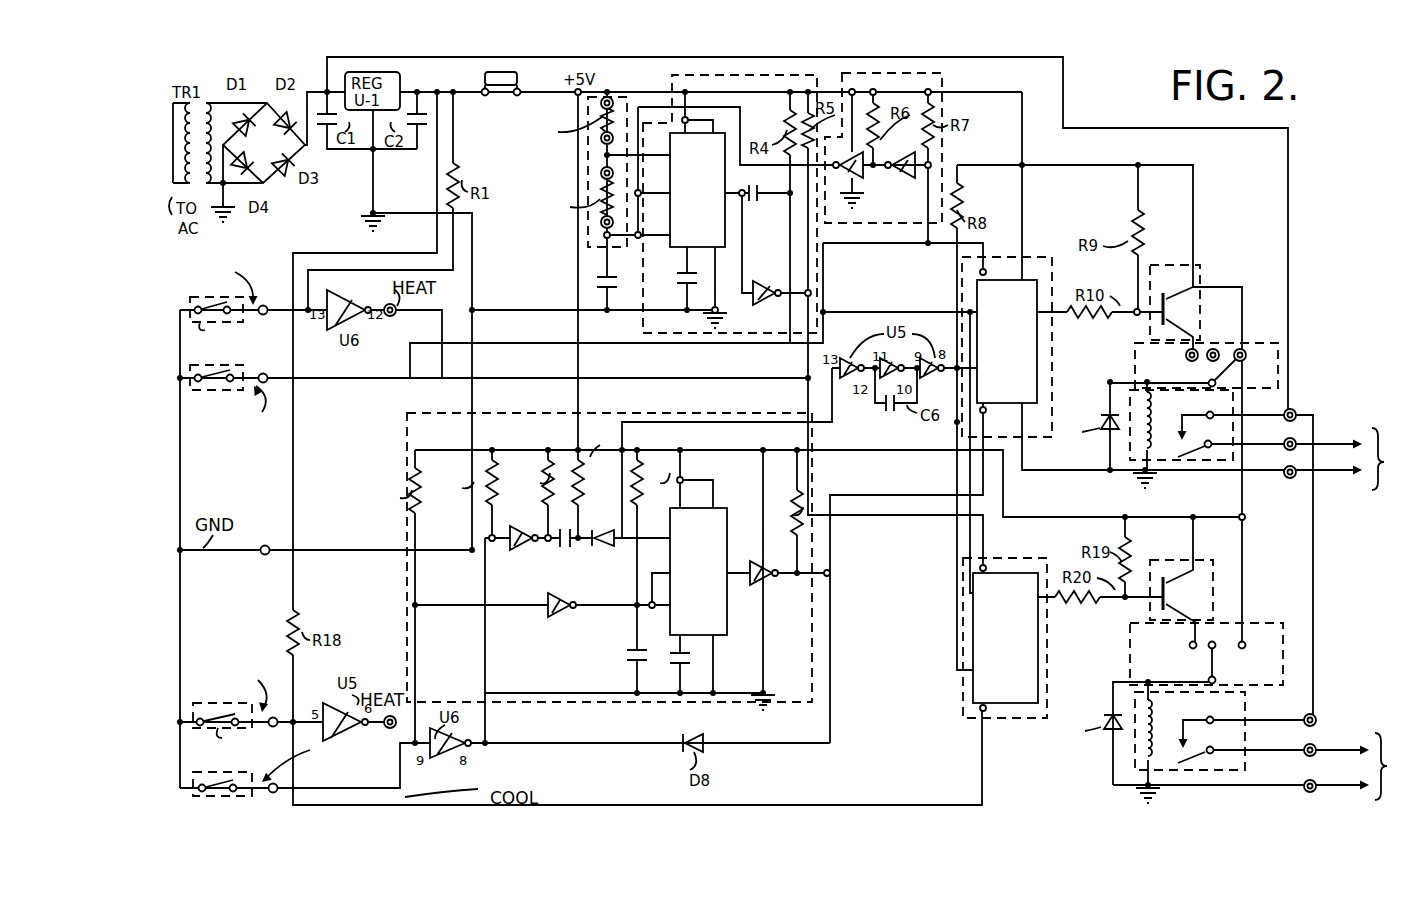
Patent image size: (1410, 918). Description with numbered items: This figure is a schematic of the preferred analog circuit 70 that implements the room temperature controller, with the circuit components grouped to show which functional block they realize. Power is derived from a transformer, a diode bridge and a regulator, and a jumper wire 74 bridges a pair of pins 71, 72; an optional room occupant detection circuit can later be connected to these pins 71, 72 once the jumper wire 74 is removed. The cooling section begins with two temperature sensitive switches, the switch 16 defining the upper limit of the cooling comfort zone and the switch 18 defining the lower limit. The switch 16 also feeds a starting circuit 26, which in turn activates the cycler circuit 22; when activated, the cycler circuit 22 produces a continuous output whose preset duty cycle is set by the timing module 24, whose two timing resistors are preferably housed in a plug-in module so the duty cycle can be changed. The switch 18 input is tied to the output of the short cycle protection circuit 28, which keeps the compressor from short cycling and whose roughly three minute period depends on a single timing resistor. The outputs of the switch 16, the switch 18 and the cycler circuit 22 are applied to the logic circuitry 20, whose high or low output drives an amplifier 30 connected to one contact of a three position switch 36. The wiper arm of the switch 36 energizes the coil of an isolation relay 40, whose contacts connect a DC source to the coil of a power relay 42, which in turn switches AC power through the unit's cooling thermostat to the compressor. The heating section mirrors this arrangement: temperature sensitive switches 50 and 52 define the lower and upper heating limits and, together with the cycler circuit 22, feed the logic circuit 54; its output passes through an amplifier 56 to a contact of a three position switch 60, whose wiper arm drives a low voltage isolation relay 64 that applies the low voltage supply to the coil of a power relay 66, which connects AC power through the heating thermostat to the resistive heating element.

The analog circuit 70 is at (1082, 108).
The jumper wire 74 is at (485, 99).
The pin 71 is at (483, 96).
The pin 72 is at (518, 96).
The timing module 24 is at (640, 100).
The cycler circuit 22 is at (642, 321).
The starting circuit 26 is at (942, 78).
The logic circuitry 20 is at (1038, 262).
The amplifier 30 is at (1200, 273).
The three position switch 36 is at (1282, 378).
The isolation relay 40 is at (1130, 395).
The power relay 42 is at (1334, 493).
The temperature sensitive switch 50 is at (243, 318).
The temperature sensitive switch 16 is at (248, 372).
The temperature sensitive switch 52 is at (200, 733).
The temperature sensitive switch 18 is at (242, 792).
The short cycle protection circuit 28 is at (829, 600).
The logic circuit 54 is at (962, 686).
The amplifier 56 is at (1205, 562).
The three position switch 60 is at (1255, 625).
The low voltage isolation relay 64 is at (1206, 775).
The power relay 66 is at (1353, 733).